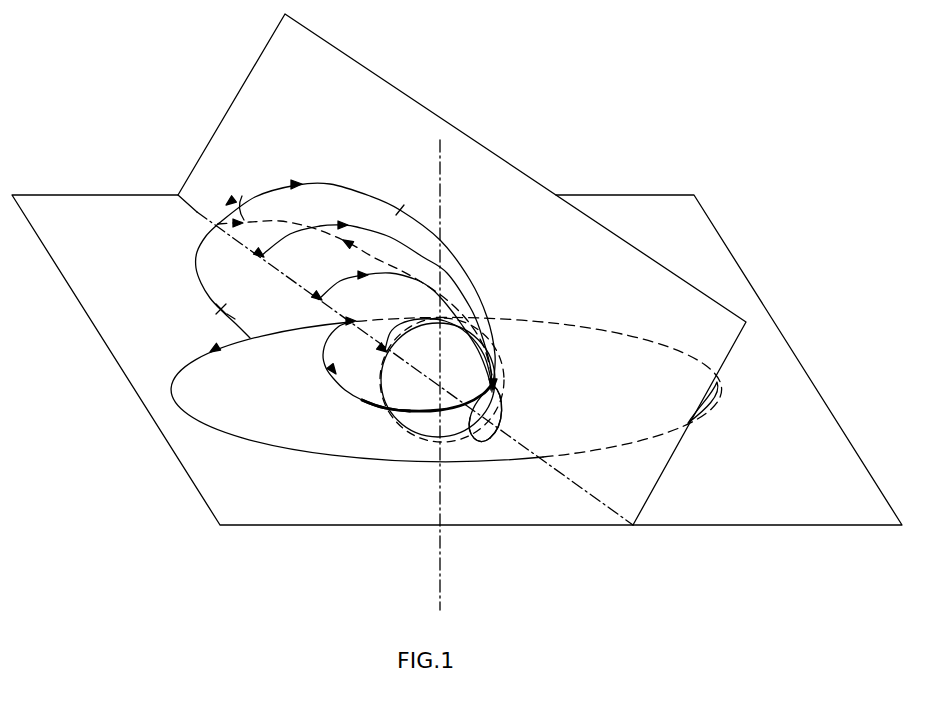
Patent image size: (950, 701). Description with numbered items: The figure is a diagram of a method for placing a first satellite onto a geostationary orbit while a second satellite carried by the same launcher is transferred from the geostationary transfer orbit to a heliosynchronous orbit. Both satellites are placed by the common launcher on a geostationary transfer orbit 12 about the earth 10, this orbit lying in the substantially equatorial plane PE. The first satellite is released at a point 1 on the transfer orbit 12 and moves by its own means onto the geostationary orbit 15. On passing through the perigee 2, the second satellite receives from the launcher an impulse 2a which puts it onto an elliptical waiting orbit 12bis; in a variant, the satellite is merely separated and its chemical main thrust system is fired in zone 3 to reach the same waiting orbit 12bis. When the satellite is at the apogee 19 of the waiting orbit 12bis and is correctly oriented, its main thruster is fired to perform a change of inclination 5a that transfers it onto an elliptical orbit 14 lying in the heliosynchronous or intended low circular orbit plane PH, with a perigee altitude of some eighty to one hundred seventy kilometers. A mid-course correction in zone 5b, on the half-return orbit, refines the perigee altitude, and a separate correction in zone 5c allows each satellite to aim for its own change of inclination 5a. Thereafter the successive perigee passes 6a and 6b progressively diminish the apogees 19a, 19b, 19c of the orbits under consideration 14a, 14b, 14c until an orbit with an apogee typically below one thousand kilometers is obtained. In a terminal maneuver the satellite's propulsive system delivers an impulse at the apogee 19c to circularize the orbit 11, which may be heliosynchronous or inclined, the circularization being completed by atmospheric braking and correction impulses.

The release point 1 is at (356, 313).
The perigee 2 is at (493, 404).
The impulse 2a is at (496, 411).
The firing zone 3 is at (479, 429).
The change of inclination 5a is at (247, 199).
The mid-course correction zone 5b is at (406, 212).
The mid-course correction zone 5c is at (215, 312).
The perigee pass 6a is at (467, 400).
The perigee pass 6b is at (386, 405).
The earth 10 is at (459, 367).
The circularized orbit 11 is at (392, 426).
The geostationary transfer orbit 12 is at (332, 355).
The elliptical waiting orbit 12bis is at (249, 332).
The elliptical orbit 14 is at (335, 183).
The orbit under consideration 14a is at (357, 227).
The orbit under consideration 14b is at (332, 287).
The orbit under consideration 14c is at (391, 325).
The geostationary orbit 15 is at (226, 430).
The apogee 19 is at (216, 224).
The apogee 19a is at (245, 262).
The apogee 19b is at (300, 302).
The apogee 19c is at (388, 353).
The equatorial plane PE is at (867, 478).
The heliosynchronous plane PH is at (722, 357).